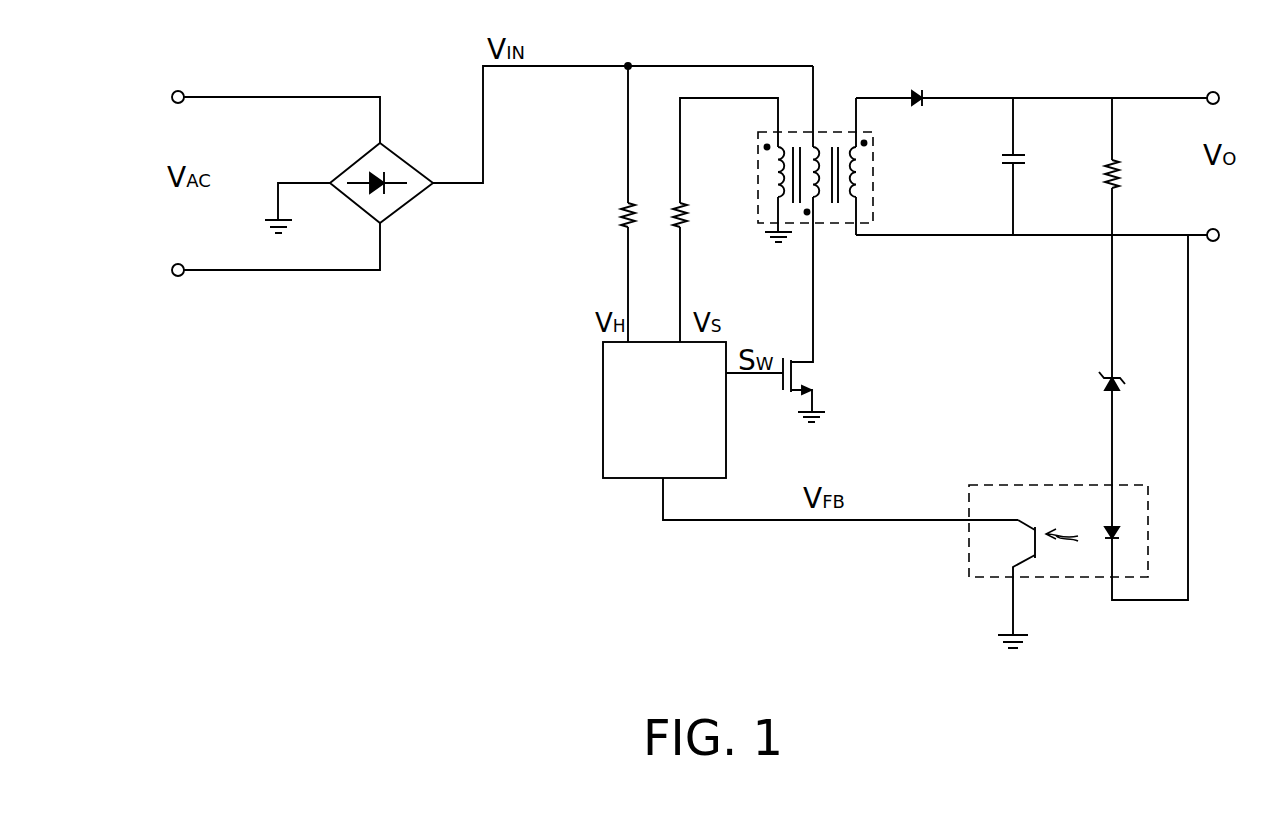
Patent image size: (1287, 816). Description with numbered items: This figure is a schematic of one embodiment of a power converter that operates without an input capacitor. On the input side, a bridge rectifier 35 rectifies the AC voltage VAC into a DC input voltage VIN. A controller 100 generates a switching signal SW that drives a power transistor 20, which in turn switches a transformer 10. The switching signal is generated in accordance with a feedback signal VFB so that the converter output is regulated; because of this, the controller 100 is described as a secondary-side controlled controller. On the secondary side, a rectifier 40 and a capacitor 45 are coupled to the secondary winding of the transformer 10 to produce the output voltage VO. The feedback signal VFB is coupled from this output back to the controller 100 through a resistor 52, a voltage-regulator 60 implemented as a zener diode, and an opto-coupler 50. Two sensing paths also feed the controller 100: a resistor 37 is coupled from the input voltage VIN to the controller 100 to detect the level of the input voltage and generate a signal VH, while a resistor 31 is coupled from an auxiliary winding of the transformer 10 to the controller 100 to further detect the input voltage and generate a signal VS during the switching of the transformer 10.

The transformer 10 is at (827, 223).
The power transistor 20 is at (803, 358).
The resistor 31 is at (686, 207).
The bridge rectifier 35 is at (408, 163).
The resistor 37 is at (622, 208).
The rectifier 40 is at (920, 92).
The capacitor 45 is at (1022, 147).
The opto-coupler 50 is at (1038, 483).
The resistor 52 is at (1118, 160).
The voltage-regulator 60 is at (1107, 375).
The controller 100 is at (603, 408).